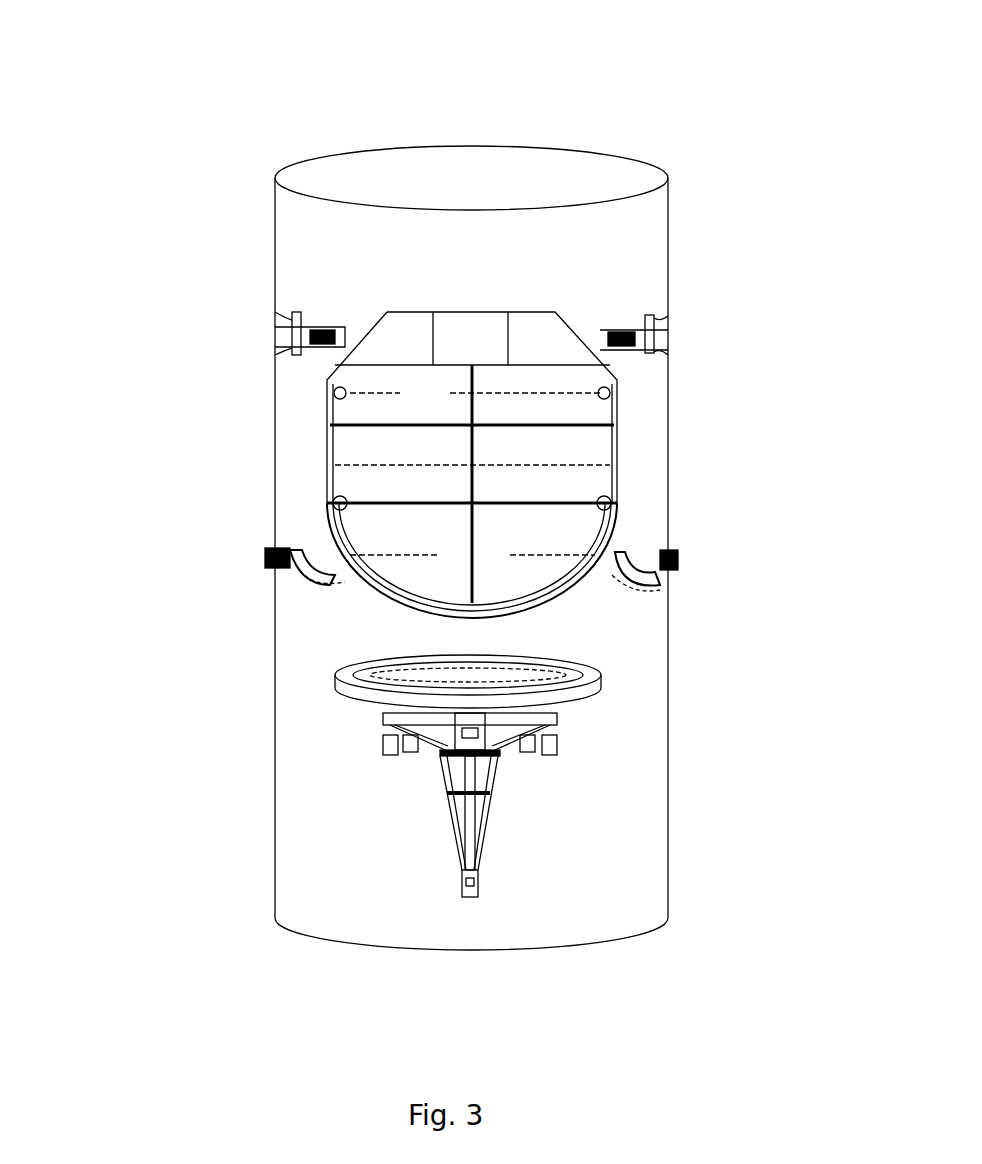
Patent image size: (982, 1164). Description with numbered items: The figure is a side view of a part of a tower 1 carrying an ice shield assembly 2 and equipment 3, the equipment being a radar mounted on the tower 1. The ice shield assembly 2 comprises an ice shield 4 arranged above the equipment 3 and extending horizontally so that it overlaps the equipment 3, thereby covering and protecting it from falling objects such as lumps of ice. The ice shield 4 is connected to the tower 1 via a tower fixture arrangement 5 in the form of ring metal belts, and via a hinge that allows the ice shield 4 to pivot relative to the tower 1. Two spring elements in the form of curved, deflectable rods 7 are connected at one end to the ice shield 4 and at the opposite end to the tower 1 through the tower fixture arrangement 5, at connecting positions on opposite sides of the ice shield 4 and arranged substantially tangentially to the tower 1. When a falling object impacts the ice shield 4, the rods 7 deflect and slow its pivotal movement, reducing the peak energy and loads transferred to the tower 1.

The tower 1 is at (308, 217).
The ice shield assembly 2 is at (340, 590).
The equipment 3 is at (343, 698).
The ice shield 4 is at (505, 577).
The tower fixture arrangement 5 is at (643, 553).
The deflectable rods 7 is at (293, 553).